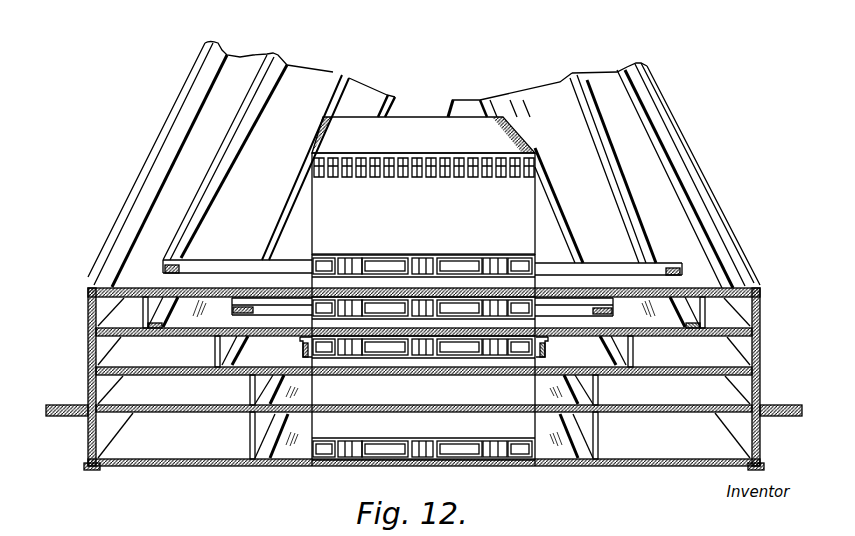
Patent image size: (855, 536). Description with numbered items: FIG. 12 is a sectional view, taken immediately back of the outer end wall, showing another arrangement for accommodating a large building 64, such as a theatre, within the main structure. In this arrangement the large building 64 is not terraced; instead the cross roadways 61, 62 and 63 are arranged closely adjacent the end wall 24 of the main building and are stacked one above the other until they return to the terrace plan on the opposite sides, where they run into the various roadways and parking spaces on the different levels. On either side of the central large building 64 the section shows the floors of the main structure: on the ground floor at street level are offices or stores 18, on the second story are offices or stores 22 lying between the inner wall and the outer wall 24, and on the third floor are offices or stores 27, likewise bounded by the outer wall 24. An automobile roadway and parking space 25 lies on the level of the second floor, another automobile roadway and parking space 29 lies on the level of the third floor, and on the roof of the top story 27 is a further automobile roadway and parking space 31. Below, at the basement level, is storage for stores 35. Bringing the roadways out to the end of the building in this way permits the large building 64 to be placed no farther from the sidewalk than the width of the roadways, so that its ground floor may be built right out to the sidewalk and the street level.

The offices or stores 18 is at (424, 390).
The offices or stores 22 is at (424, 351).
The outer wall 24 is at (88, 356).
The automobile roadway and parking space 25 is at (424, 350).
The offices or stores 27 is at (424, 312).
The automobile roadway and parking space 29 is at (422, 185).
The automobile roadway and parking space 31 is at (424, 165).
The storage for stores 35 is at (424, 435).
The cross roadway 61 is at (381, 366).
The cross roadway 62 is at (478, 328).
The cross roadway 63 is at (442, 283).
The large building 64 is at (423, 420).